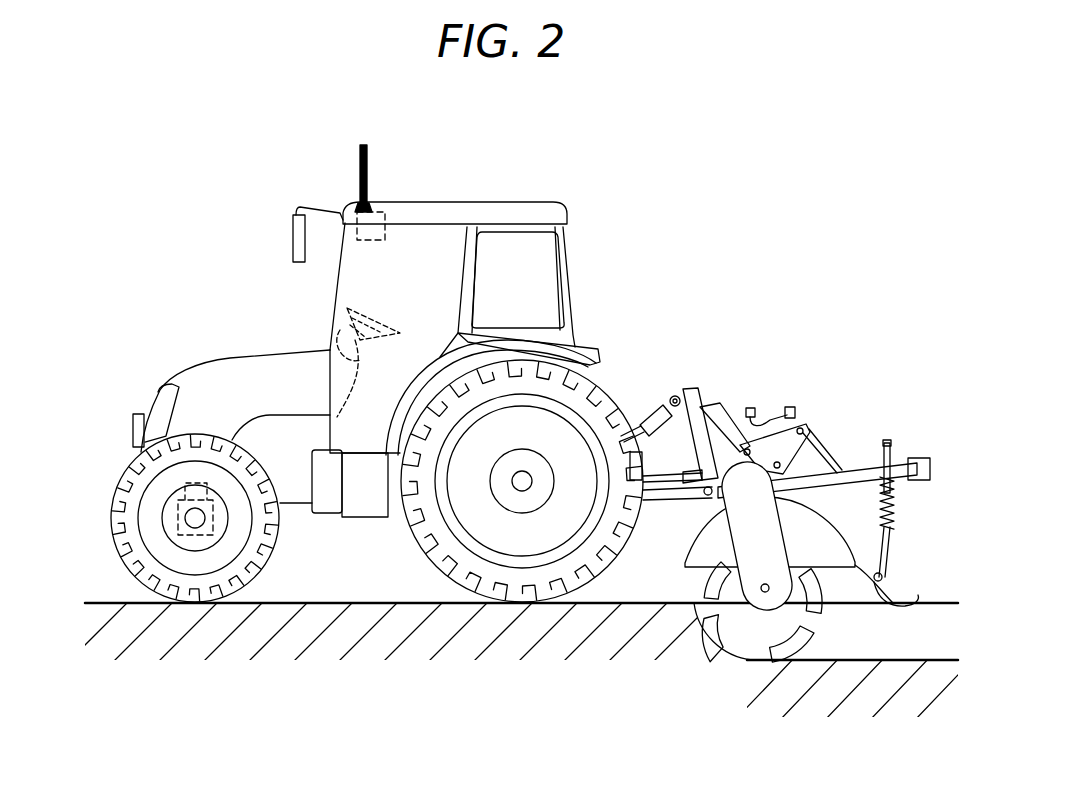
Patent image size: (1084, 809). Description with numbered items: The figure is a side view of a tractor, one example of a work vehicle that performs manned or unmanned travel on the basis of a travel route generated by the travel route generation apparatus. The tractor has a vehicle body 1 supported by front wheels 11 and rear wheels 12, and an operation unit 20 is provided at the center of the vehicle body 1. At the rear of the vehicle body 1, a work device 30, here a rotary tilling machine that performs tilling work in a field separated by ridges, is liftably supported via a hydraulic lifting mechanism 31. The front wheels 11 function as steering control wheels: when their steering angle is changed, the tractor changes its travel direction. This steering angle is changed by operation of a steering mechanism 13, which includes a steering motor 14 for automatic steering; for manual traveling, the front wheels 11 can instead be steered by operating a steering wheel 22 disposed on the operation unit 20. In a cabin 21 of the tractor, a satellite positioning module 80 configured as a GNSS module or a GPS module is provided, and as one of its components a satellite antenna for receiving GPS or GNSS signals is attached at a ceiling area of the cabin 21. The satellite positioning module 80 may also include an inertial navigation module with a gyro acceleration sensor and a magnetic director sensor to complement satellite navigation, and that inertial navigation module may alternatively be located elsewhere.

The vehicle body 1 is at (330, 527).
The front wheels 11 is at (190, 603).
The rear wheels 12 is at (533, 585).
The steering mechanism 13 is at (173, 517).
The steering motor 14 is at (170, 487).
The operation unit 20 is at (400, 313).
The cabin 21 is at (547, 212).
The steering wheel 22 is at (358, 325).
The work device 30 is at (765, 643).
The hydraulic lifting mechanism 31 is at (707, 390).
The satellite positioning module 80 is at (373, 196).